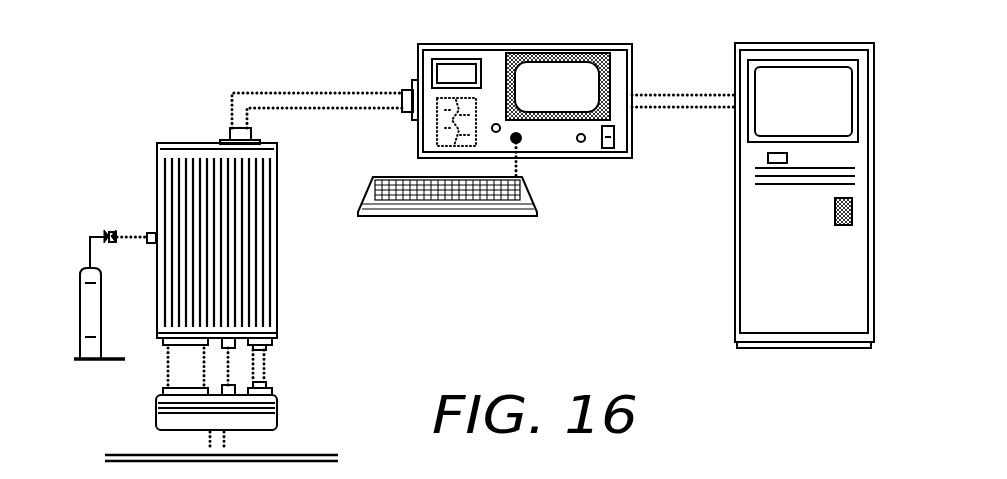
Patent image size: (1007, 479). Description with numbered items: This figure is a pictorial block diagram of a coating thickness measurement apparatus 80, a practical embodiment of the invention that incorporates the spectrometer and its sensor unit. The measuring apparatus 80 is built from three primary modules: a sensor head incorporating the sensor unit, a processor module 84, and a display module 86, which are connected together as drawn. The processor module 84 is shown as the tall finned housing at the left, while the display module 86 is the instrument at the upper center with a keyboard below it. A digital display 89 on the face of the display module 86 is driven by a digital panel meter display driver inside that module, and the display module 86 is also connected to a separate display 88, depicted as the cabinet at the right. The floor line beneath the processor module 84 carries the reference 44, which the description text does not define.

The coating thickness measurement apparatus 80 is at (416, 339).
The processor module 84 is at (278, 273).
The display module 86 is at (575, 158).
The display 88 is at (735, 258).
The digital display 89 is at (447, 60).
The base/floor 44 is at (305, 454).